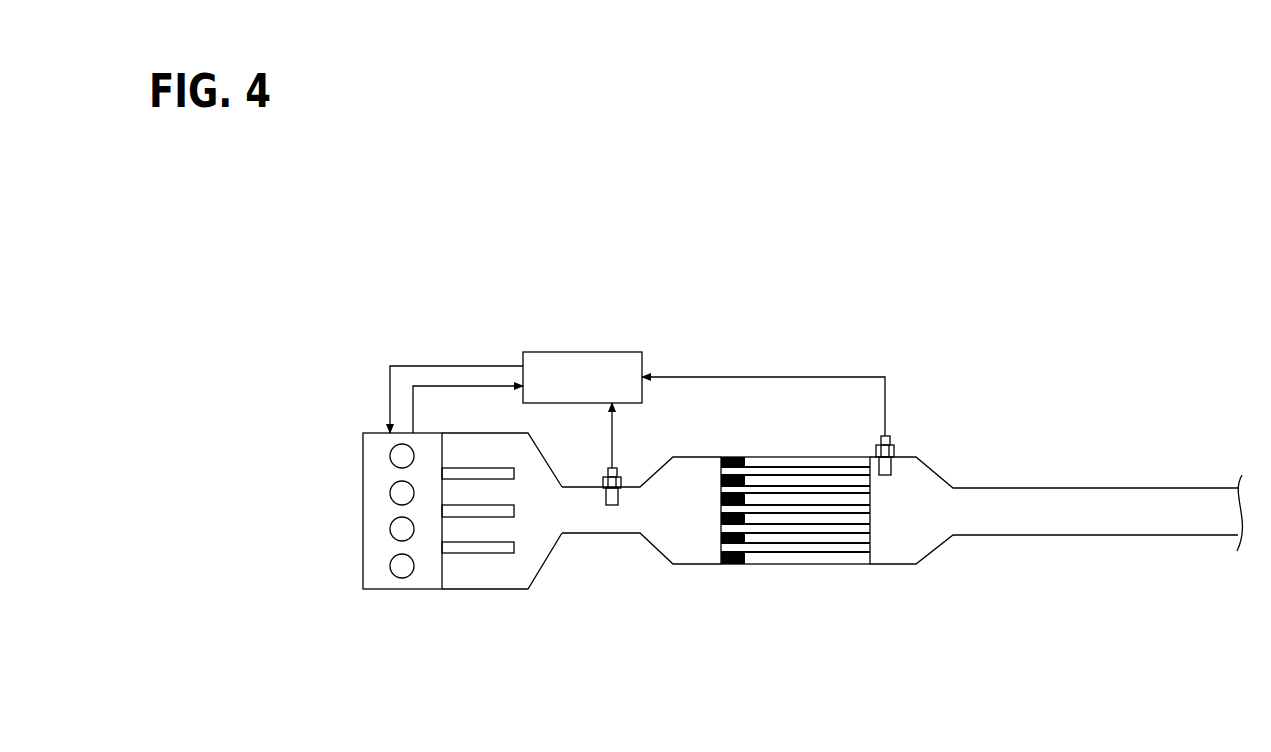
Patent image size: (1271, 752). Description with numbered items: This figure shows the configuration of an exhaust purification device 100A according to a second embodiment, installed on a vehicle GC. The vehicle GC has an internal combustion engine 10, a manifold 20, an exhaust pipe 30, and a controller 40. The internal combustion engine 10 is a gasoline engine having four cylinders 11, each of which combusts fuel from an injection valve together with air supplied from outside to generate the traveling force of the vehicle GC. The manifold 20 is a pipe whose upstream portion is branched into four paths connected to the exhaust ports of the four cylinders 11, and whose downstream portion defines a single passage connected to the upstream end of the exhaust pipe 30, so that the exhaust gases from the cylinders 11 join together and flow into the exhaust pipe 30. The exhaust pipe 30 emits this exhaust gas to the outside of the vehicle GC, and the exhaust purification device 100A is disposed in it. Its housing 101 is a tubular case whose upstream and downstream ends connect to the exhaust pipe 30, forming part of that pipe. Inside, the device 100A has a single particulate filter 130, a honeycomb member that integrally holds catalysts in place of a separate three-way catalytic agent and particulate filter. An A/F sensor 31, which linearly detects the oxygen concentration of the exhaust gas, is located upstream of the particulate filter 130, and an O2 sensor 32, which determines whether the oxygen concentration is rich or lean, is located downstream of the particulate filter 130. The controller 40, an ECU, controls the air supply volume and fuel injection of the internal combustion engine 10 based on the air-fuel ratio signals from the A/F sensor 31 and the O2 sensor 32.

The vehicle GC is at (398, 301).
The internal combustion engine 10 is at (400, 590).
The cylinder 11 is at (390, 456).
The manifold 20 is at (484, 590).
The exhaust pipe 30 is at (590, 536).
The A/F sensor 31 is at (621, 475).
The O2 sensor 32 is at (895, 447).
The controller 40 is at (589, 352).
The exhaust purification device 100A is at (812, 516).
The housing 101 is at (839, 566).
The particulate filter 130 is at (811, 541).